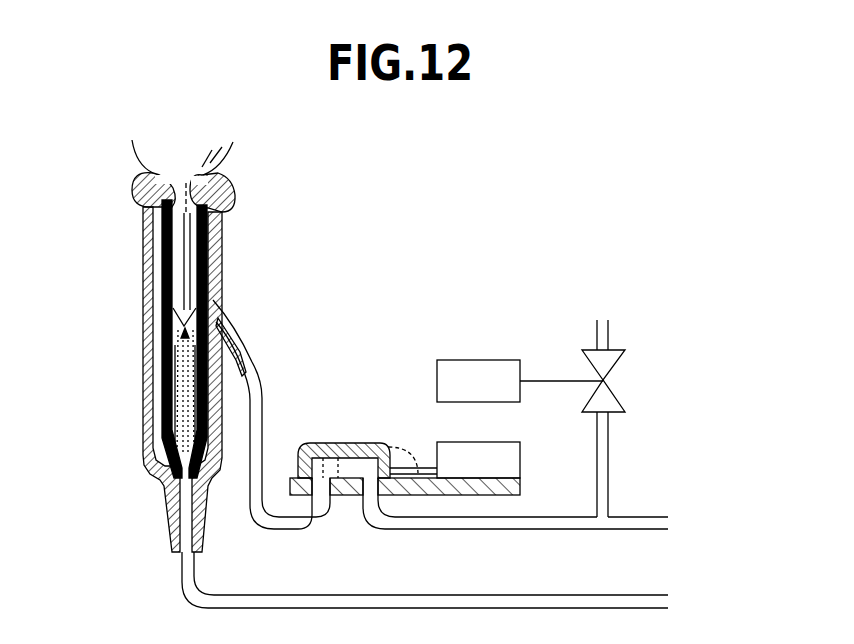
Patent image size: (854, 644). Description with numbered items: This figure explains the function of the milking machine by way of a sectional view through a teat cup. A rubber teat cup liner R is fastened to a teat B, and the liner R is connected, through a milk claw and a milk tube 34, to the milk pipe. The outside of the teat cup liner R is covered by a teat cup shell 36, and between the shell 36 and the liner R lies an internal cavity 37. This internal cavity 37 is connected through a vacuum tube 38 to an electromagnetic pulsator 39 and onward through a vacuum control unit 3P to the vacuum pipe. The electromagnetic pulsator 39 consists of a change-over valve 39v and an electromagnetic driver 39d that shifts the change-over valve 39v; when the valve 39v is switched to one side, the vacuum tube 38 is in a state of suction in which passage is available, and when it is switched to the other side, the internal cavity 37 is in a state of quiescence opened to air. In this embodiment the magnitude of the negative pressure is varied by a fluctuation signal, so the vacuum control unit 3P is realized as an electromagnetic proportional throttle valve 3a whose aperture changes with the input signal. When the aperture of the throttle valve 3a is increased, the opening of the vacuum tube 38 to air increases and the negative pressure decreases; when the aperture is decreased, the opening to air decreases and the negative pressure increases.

The milk tube 34 is at (307, 597).
The teat cup shell 36 is at (150, 393).
The internal cavity 37 is at (208, 258).
The vacuum tube 38 is at (263, 417).
The electromagnetic pulsator 39 is at (342, 503).
The change-over valve 39v is at (321, 446).
The electromagnetic driver 39d is at (558, 470).
The electromagnetic proportional throttle valve 3a is at (598, 372).
The vacuum control unit 3P is at (622, 340).
The teat B is at (223, 195).
The teat cup liner R is at (174, 280).